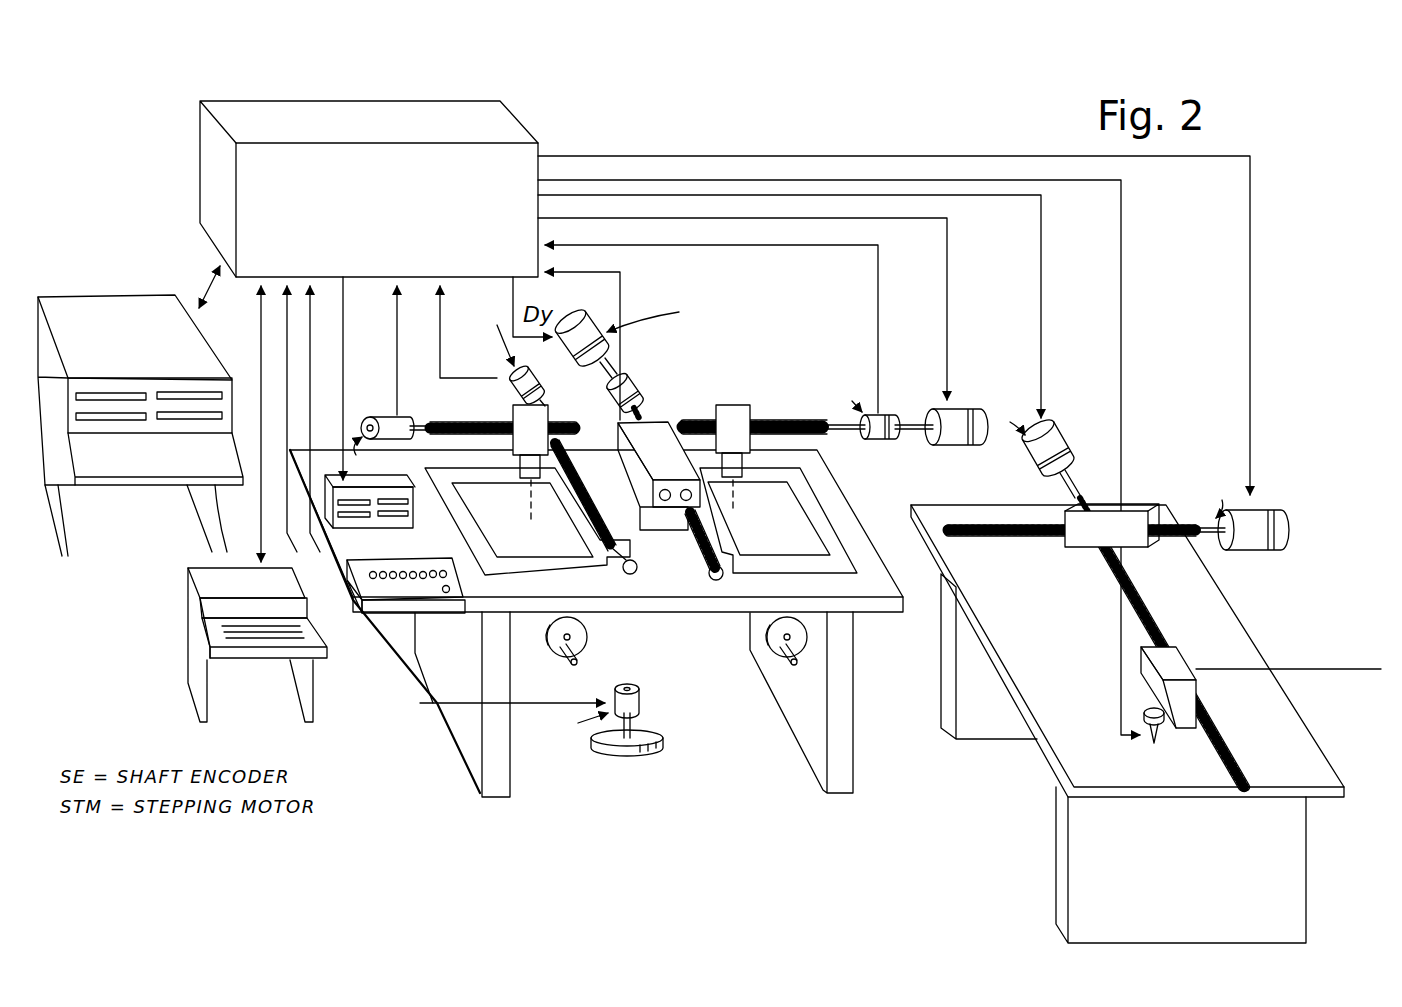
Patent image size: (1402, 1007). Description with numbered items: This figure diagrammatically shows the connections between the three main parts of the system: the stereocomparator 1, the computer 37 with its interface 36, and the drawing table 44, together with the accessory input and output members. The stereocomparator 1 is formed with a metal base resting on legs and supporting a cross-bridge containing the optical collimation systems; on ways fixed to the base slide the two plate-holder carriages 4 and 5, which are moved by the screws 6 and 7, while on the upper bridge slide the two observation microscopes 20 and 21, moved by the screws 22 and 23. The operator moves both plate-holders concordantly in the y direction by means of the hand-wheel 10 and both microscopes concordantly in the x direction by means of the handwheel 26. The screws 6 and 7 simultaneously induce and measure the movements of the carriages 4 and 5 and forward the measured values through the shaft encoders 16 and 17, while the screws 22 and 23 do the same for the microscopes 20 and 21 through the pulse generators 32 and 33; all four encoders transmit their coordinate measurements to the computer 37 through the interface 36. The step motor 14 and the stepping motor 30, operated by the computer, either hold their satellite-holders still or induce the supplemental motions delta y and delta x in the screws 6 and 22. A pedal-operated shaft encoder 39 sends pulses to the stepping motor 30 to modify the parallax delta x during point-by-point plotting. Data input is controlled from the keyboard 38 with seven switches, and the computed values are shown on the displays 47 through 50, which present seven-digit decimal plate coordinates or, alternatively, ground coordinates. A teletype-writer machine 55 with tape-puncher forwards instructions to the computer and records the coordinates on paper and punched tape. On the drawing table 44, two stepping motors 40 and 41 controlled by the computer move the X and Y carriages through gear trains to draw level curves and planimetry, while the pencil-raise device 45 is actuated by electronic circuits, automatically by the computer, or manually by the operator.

The stereocomparator 1 is at (695, 613).
The plate-holder carriage 4 is at (843, 562).
The plate-holder carriage 5 is at (597, 613).
The screw 6 is at (713, 613).
The screw 7 is at (635, 560).
The hand-wheel 10 is at (773, 643).
The step motor 14 is at (600, 322).
The shaft encoder 16 is at (632, 395).
The shaft encoder 17 is at (541, 392).
The observation microscope 20 is at (735, 403).
The observation microscope 21 is at (548, 417).
The screw 22 is at (775, 420).
The screw 23 is at (478, 420).
The handwheel 26 is at (553, 645).
The stepping motor 30 is at (962, 412).
The pulse generator 32 is at (890, 410).
The pulse generator 33 is at (399, 398).
The interface 36 is at (495, 115).
The computer 37 is at (108, 306).
The keyboard 38 is at (397, 607).
The shaft encoder 39 is at (634, 684).
The stepping motor 40 is at (1064, 440).
The stepping motor 41 is at (1280, 540).
The drawing table 44 is at (1232, 640).
The pencil-raise device 45 is at (1174, 645).
The display 47 is at (335, 478).
The display 50 is at (373, 434).
The teletype-writer machine 55 is at (192, 611).